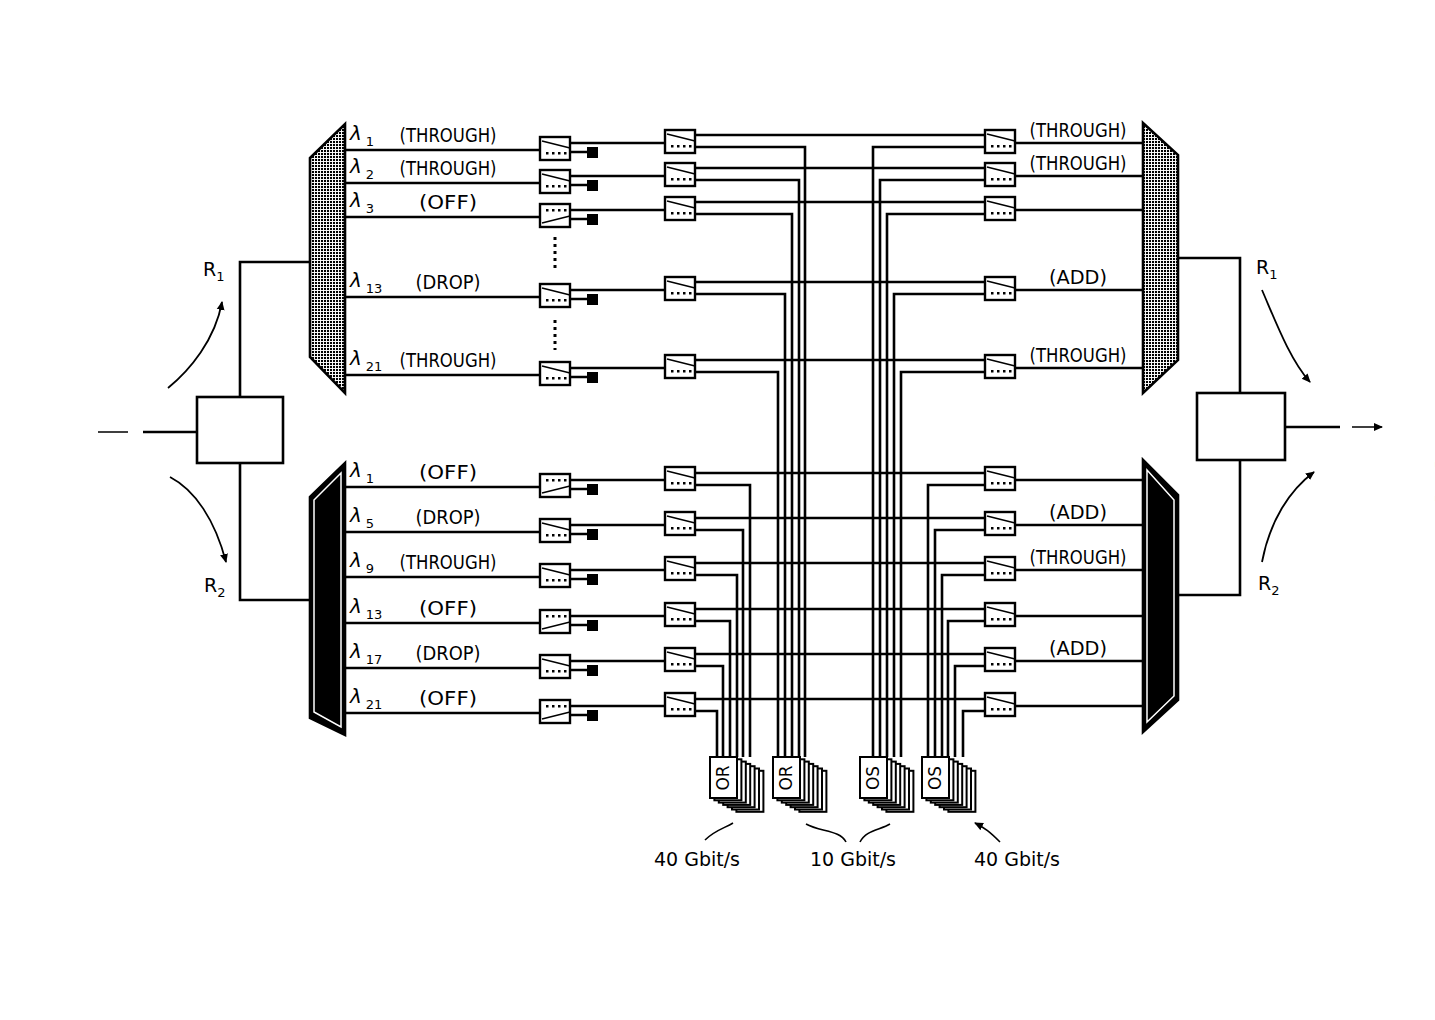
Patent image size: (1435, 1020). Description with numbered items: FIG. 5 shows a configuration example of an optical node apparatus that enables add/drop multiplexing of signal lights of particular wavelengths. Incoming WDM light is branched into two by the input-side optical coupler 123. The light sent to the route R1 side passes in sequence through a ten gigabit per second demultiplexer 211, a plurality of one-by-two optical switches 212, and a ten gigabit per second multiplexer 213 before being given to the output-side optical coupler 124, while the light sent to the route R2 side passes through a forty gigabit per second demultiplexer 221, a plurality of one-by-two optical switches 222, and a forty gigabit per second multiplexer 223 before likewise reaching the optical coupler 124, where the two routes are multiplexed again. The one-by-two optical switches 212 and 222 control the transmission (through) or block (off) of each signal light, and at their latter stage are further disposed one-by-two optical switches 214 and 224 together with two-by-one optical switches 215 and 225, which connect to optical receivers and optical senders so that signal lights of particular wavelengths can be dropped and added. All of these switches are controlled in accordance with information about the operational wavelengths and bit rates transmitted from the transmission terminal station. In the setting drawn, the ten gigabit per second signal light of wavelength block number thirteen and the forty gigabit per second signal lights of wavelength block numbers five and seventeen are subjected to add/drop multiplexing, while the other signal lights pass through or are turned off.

The optical coupler 123 is at (283, 425).
The optical coupler 124 is at (1197, 425).
The 10 Gbit/s demultiplexer 211 is at (310, 200).
The 1×2 optical switches 212 is at (547, 126).
The 10 Gbit/s multiplexer 213 is at (1178, 185).
The 1×2 optical switches 214 is at (681, 116).
The 2×1 optical switches 215 is at (1006, 116).
The 40 Gbit/s demultiplexer 221 is at (310, 548).
The 1×2 optical switches 222 is at (547, 465).
The 40 Gbit/s multiplexer 223 is at (1178, 542).
The 1×2 optical switches 224 is at (681, 455).
The 2×1 optical switches 225 is at (1008, 454).